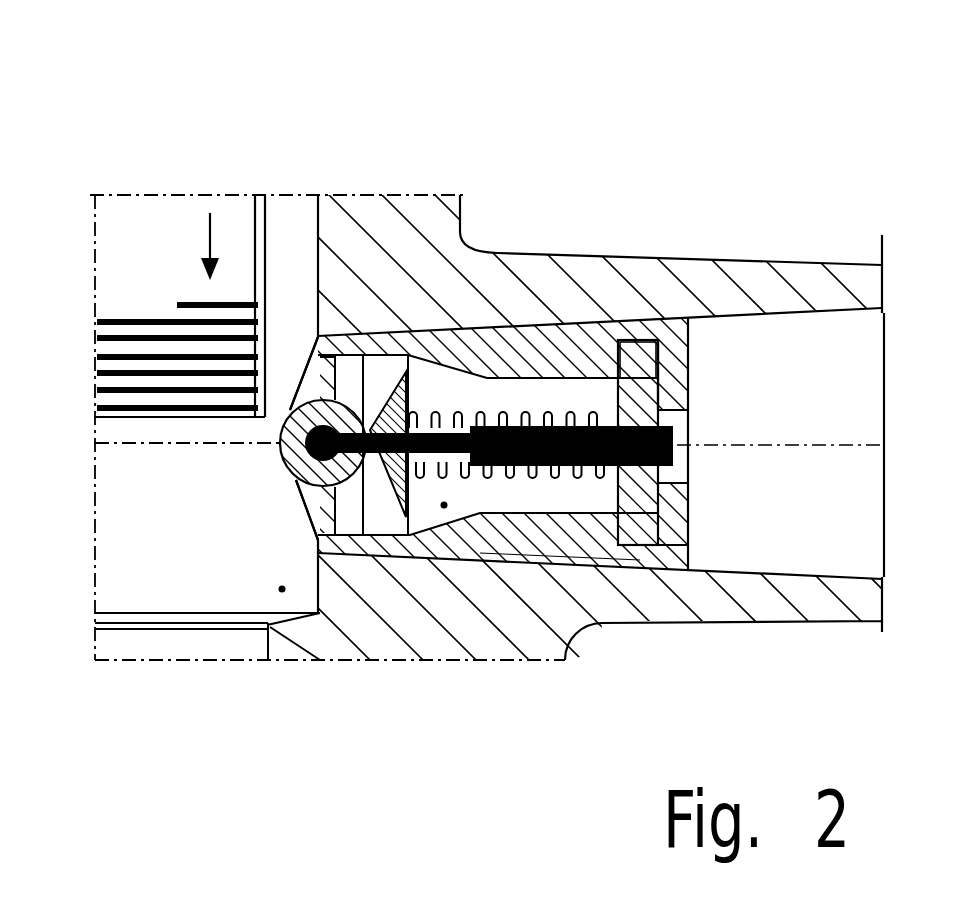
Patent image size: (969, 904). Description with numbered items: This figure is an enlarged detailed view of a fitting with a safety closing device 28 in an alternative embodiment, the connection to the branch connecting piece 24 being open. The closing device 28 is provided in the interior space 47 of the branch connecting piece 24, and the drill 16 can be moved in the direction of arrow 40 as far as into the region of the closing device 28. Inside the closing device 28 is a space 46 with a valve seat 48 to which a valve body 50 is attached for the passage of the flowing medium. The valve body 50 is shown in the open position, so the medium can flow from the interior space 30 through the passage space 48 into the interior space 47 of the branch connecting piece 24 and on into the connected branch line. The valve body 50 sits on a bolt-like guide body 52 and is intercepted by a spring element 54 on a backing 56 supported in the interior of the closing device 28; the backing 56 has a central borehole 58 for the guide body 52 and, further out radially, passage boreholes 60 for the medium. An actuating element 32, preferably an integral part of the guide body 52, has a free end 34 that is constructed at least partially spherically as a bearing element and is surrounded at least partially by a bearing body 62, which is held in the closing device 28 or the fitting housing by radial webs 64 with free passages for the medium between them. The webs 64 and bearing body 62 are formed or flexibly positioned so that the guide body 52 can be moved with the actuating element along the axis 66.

The drill 16 is at (260, 230).
The branch connecting piece 24 is at (815, 293).
The closing device 28 is at (527, 355).
The interior space 30 is at (282, 589).
The actuating element 32 is at (370, 533).
The free end 34 is at (328, 485).
The arrow 40 is at (207, 242).
The space 46 is at (444, 505).
The interior space 47 is at (732, 383).
The valve seat 48 is at (480, 517).
The valve body 50 is at (392, 405).
The guide body 52 is at (490, 420).
The spring element 54 is at (560, 563).
The backing 56 is at (640, 537).
The central borehole 58 is at (690, 540).
The passage boreholes 60 is at (640, 340).
The bearing body 62 is at (280, 457).
The radial webs 64 is at (325, 378).
The axis 66 is at (130, 445).